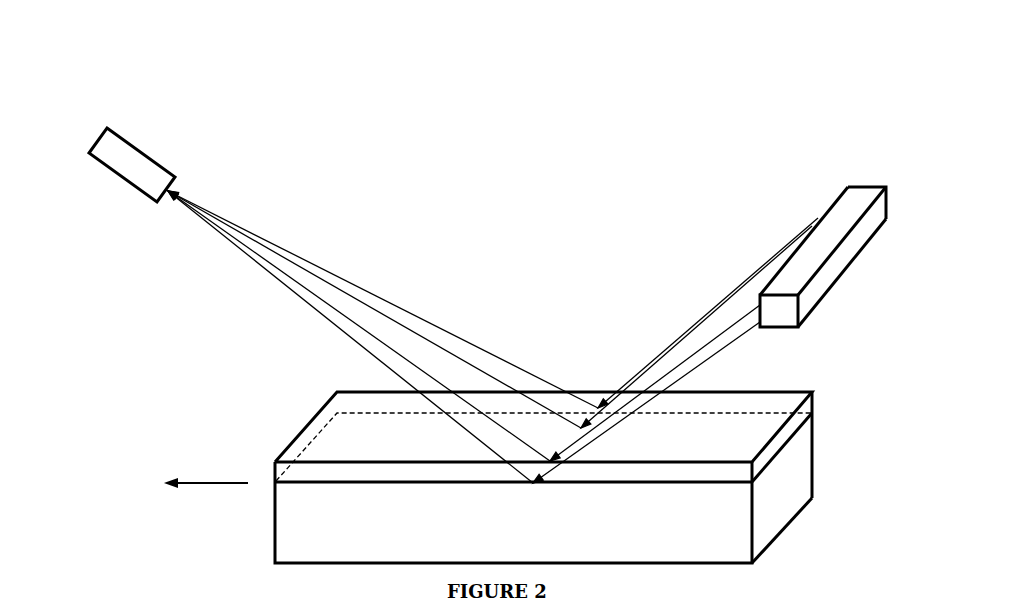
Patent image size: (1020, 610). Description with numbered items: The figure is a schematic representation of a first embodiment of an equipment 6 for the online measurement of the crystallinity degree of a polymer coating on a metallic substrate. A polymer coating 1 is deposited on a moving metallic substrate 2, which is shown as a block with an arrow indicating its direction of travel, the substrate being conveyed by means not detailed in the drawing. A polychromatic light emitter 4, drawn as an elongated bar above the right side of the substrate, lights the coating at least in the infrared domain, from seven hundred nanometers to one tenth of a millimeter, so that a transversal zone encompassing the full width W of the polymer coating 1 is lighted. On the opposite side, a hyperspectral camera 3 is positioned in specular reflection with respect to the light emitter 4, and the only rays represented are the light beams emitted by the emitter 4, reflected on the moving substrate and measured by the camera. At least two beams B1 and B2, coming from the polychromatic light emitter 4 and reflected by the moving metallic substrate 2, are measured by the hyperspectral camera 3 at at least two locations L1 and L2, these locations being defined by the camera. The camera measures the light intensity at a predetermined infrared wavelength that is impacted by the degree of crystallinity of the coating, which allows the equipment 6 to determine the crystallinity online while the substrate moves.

The polymer coating 1 is at (818, 432).
The moving metallic substrate 2 is at (797, 500).
The hyperspectral camera 3 is at (93, 140).
The polychromatic light emitter 4 is at (848, 256).
The equipment 6 is at (408, 122).
The full width W is at (595, 385).
The beam B1 is at (412, 312).
The beam B2 is at (334, 266).
The location L1 is at (588, 463).
The location L2 is at (519, 489).